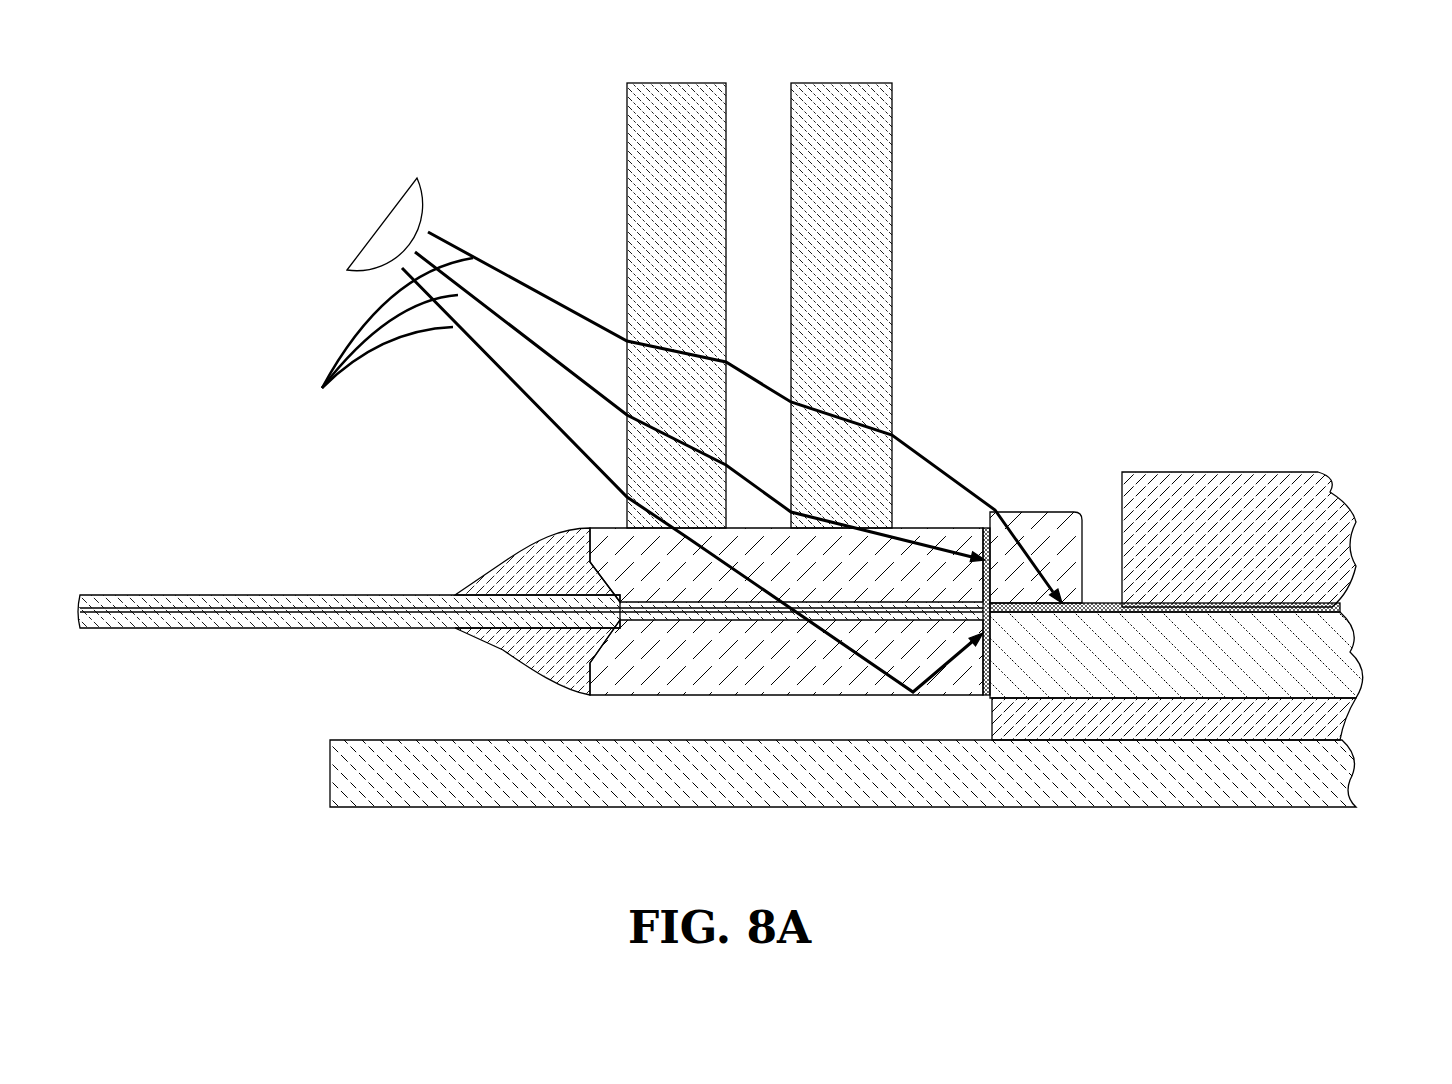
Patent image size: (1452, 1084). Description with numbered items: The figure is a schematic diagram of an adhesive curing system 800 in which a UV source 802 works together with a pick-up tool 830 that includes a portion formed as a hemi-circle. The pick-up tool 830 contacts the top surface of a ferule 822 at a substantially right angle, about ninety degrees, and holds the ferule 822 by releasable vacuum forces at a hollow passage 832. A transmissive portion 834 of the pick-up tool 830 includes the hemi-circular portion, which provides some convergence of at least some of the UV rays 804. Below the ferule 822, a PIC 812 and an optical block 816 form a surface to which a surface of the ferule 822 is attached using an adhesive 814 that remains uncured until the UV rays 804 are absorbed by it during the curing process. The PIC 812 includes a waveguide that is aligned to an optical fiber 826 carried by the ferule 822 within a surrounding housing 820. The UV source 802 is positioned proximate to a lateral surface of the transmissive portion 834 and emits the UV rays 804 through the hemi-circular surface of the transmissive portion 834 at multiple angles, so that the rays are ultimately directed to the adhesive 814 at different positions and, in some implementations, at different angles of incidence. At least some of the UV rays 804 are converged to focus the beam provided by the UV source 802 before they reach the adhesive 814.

The adhesive curing system 800 is at (617, 418).
The UV source 802 is at (358, 249).
The UV rays 804 is at (387, 339).
The PIC 812 is at (1368, 660).
The adhesive 814 is at (985, 695).
The optical block 816 is at (1045, 512).
The ferrule housing 820 is at (440, 655).
The ferule 822 is at (603, 528).
The optical fiber 826 is at (174, 628).
The pick-up tool 830 is at (760, 292).
The hollow passage 832 is at (770, 83).
The transmissive portion 834 is at (627, 220).